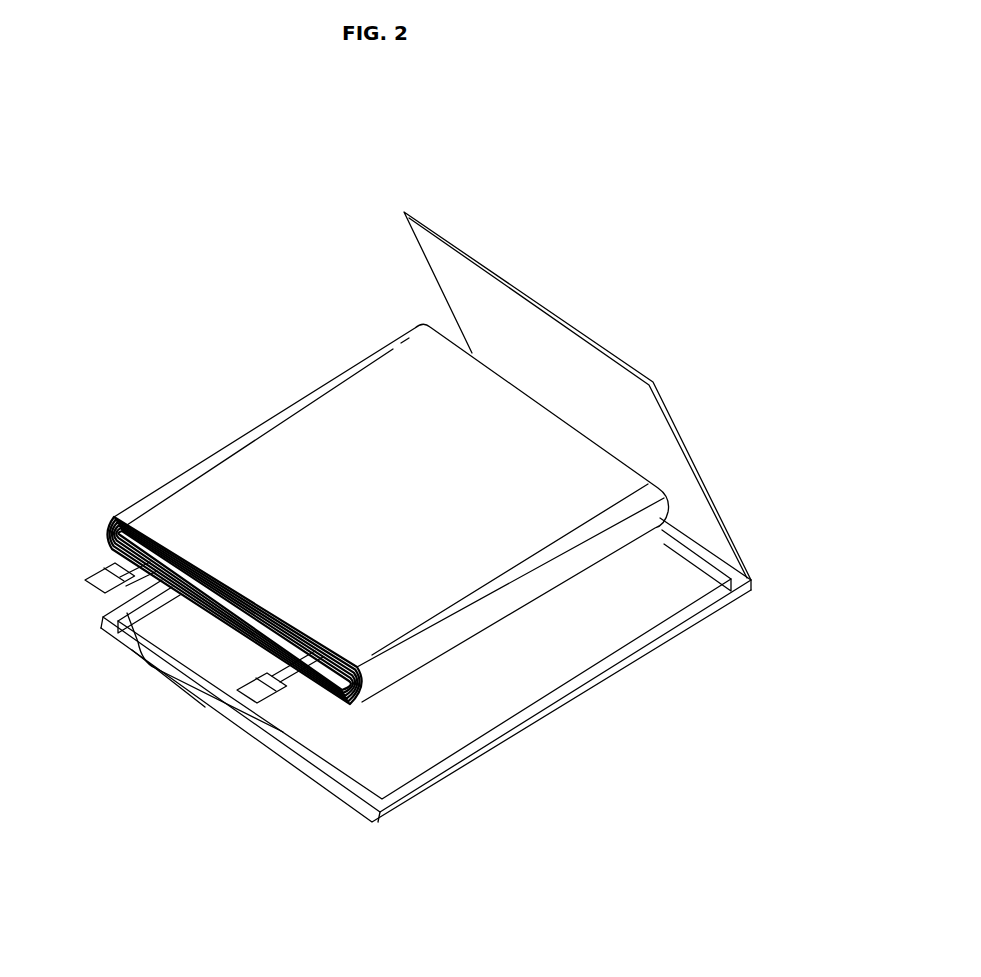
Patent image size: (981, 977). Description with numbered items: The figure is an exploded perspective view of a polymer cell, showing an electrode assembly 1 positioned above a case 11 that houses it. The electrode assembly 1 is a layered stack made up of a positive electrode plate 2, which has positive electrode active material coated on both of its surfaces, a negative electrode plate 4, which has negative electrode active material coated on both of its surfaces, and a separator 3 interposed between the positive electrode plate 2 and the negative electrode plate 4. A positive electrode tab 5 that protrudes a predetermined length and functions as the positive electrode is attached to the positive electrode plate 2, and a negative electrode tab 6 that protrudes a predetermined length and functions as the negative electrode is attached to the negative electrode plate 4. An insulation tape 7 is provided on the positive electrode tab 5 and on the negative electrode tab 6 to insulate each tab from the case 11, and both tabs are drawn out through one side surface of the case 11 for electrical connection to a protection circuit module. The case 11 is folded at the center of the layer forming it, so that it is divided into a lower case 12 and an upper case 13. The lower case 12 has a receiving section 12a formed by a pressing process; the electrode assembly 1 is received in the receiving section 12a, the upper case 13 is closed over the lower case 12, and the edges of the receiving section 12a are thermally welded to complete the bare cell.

The electrode assembly 1 is at (351, 561).
The positive electrode plate 2 is at (115, 515).
The separator 3 is at (108, 519).
The negative electrode plate 4 is at (109, 530).
The positive electrode tab 5 is at (280, 668).
The negative electrode tab 6 is at (120, 558).
The insulation tape 7 is at (102, 570).
The case 11 is at (472, 517).
The lower case 12 is at (728, 587).
The receiving section 12a is at (482, 706).
The upper case 13 is at (609, 396).